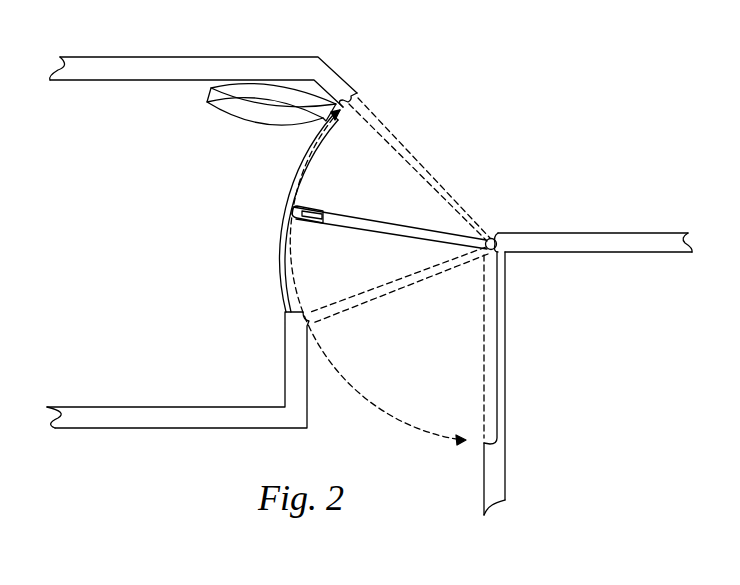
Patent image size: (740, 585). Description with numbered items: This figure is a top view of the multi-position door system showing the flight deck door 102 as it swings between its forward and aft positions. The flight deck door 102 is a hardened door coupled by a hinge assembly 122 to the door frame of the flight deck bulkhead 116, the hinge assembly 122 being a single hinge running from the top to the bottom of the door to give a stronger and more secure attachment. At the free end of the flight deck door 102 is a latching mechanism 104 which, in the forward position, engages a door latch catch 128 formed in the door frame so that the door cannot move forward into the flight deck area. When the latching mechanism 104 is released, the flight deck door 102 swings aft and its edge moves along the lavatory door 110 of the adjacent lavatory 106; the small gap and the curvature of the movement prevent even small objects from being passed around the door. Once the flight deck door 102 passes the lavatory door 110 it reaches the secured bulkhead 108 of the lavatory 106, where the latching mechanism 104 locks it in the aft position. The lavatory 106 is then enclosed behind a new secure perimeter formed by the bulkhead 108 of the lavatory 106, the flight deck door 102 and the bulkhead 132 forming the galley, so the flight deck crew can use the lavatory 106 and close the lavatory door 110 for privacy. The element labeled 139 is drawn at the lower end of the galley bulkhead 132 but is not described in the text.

The flight deck door 102 is at (408, 224).
The latching mechanism 104 is at (307, 204).
The lavatory 106 is at (132, 248).
The secured bulkhead 108 is at (137, 430).
The lavatory door 110 is at (236, 128).
The flight deck bulkhead 116 is at (339, 75).
The hinge assembly 122 is at (490, 236).
The door latch catch 128 is at (359, 93).
The bulkhead 132 is at (500, 477).
The panel 139 is at (497, 442).